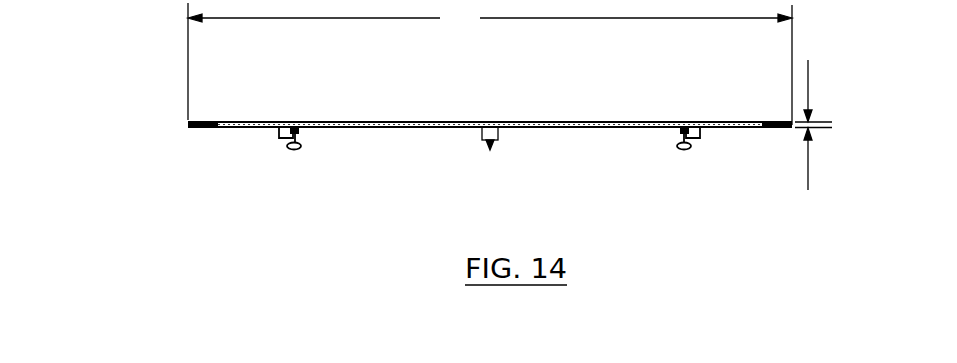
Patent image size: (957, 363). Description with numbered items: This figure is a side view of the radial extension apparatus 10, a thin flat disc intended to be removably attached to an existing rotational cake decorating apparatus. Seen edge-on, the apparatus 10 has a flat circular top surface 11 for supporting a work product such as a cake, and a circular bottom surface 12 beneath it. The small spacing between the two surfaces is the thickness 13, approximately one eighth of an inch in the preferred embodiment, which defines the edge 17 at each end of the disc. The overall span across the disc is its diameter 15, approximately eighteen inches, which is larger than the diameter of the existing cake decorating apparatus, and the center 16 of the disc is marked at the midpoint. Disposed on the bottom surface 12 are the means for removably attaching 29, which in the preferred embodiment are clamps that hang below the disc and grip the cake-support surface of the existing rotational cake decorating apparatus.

The radial extension apparatus 10 is at (410, 152).
The flat circular top surface 11 is at (490, 78).
The circular bottom surface 12 is at (490, 182).
The thickness 13 is at (831, 125).
The diameter 15 is at (490, 64).
The center 16 is at (526, 102).
The edge 17 is at (440, 106).
The means for removably attaching 29 is at (489, 182).